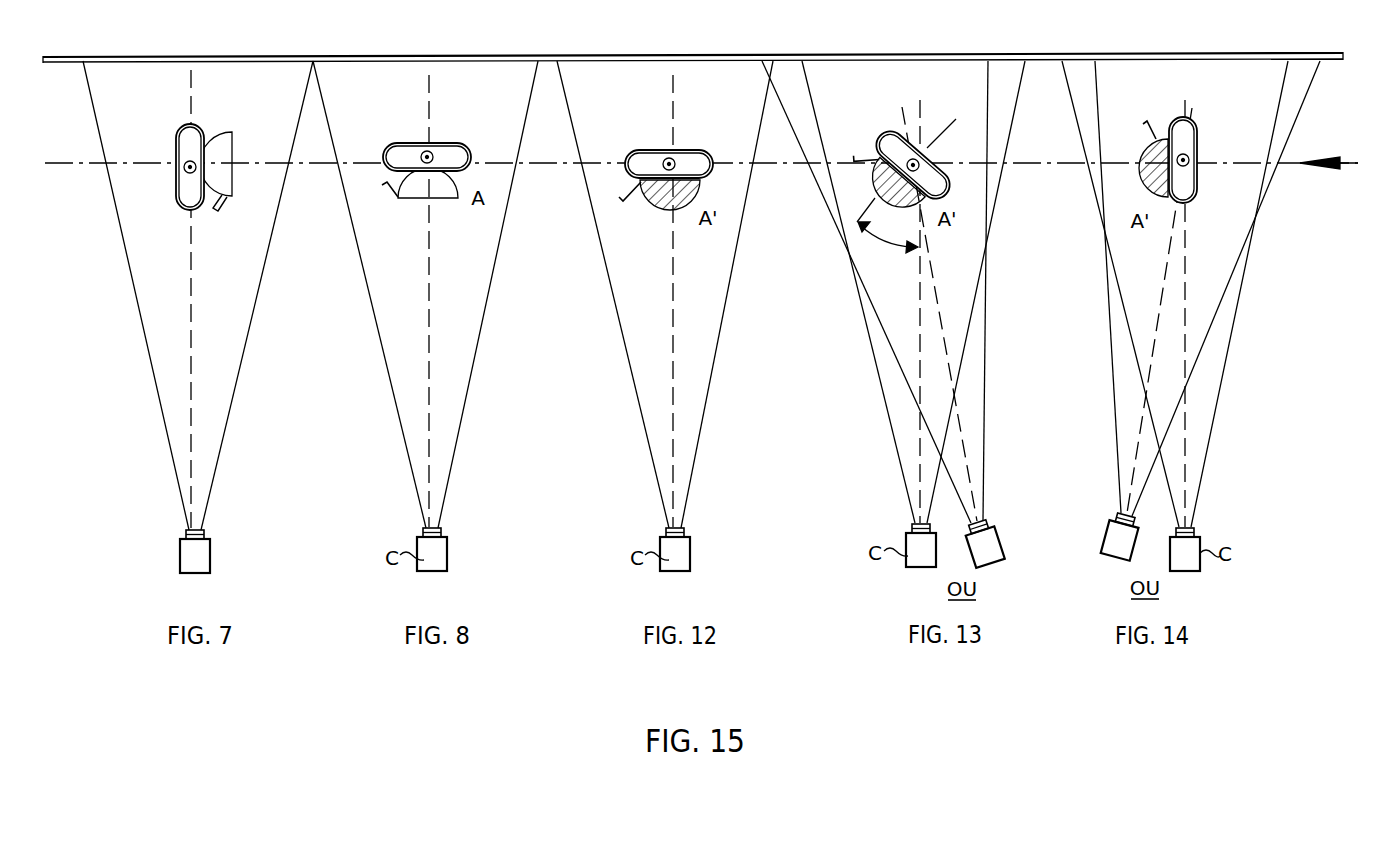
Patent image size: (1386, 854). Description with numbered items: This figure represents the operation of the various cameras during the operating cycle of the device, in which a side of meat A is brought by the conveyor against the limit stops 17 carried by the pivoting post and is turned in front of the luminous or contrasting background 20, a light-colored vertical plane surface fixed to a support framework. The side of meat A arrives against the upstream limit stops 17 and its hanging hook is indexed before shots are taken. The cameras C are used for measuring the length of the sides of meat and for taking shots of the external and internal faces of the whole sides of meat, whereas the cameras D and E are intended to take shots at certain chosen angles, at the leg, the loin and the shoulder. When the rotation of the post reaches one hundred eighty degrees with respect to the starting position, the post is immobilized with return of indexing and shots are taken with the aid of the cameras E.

The limit stops 17 is at (208, 118).
The background 20 is at (615, 62).
The side of meat A is at (227, 171).
The camera C is at (182, 560).
The camera D is at (1000, 553).
The camera E is at (1108, 553).